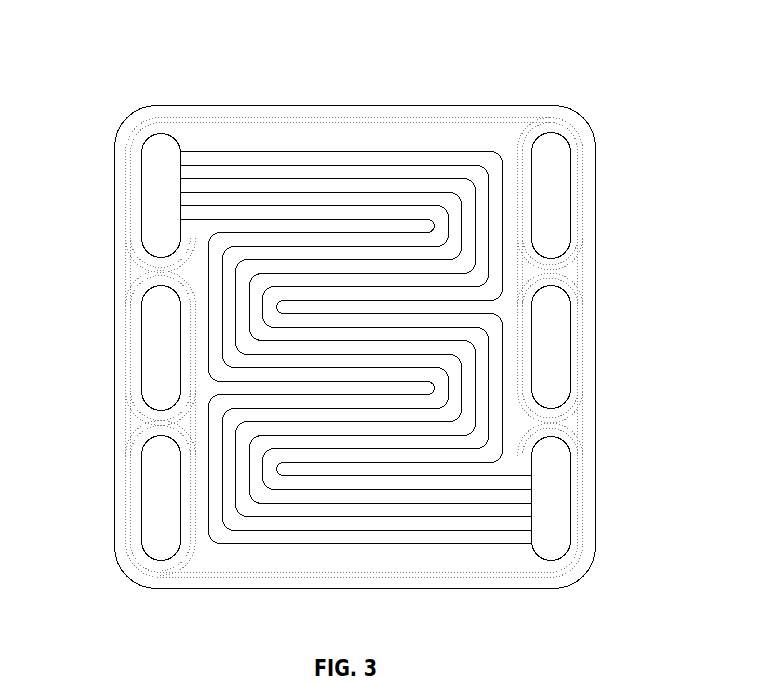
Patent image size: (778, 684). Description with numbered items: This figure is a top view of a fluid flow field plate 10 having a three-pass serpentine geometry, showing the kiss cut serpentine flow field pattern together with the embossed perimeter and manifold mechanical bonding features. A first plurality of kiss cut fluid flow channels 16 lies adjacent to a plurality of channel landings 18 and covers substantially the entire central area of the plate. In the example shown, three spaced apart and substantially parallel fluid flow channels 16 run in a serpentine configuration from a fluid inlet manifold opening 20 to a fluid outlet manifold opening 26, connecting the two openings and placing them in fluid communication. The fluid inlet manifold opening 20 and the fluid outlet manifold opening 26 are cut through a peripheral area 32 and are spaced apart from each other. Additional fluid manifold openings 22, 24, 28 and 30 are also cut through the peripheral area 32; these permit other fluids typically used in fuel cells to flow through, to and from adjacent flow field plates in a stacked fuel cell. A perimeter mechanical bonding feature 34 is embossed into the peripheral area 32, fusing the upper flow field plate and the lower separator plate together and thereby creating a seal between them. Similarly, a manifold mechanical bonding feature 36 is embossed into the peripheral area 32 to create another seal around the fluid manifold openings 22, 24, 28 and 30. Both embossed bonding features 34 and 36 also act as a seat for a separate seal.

The fluid flow field plate 10 is at (664, 43).
The kiss cut fluid flow channels 16 is at (253, 157).
The channel landings 18 is at (213, 177).
The fluid inlet manifold opening 20 is at (155, 193).
The fluid manifold opening 22 is at (155, 350).
The fluid manifold opening 24 is at (155, 506).
The fluid outlet manifold opening 26 is at (553, 506).
The fluid manifold opening 28 is at (555, 351).
The fluid manifold opening 30 is at (555, 194).
The peripheral area 32 is at (347, 135).
The perimeter mechanical bonding feature 34 is at (582, 447).
The manifold mechanical bonding feature 36 is at (520, 162).